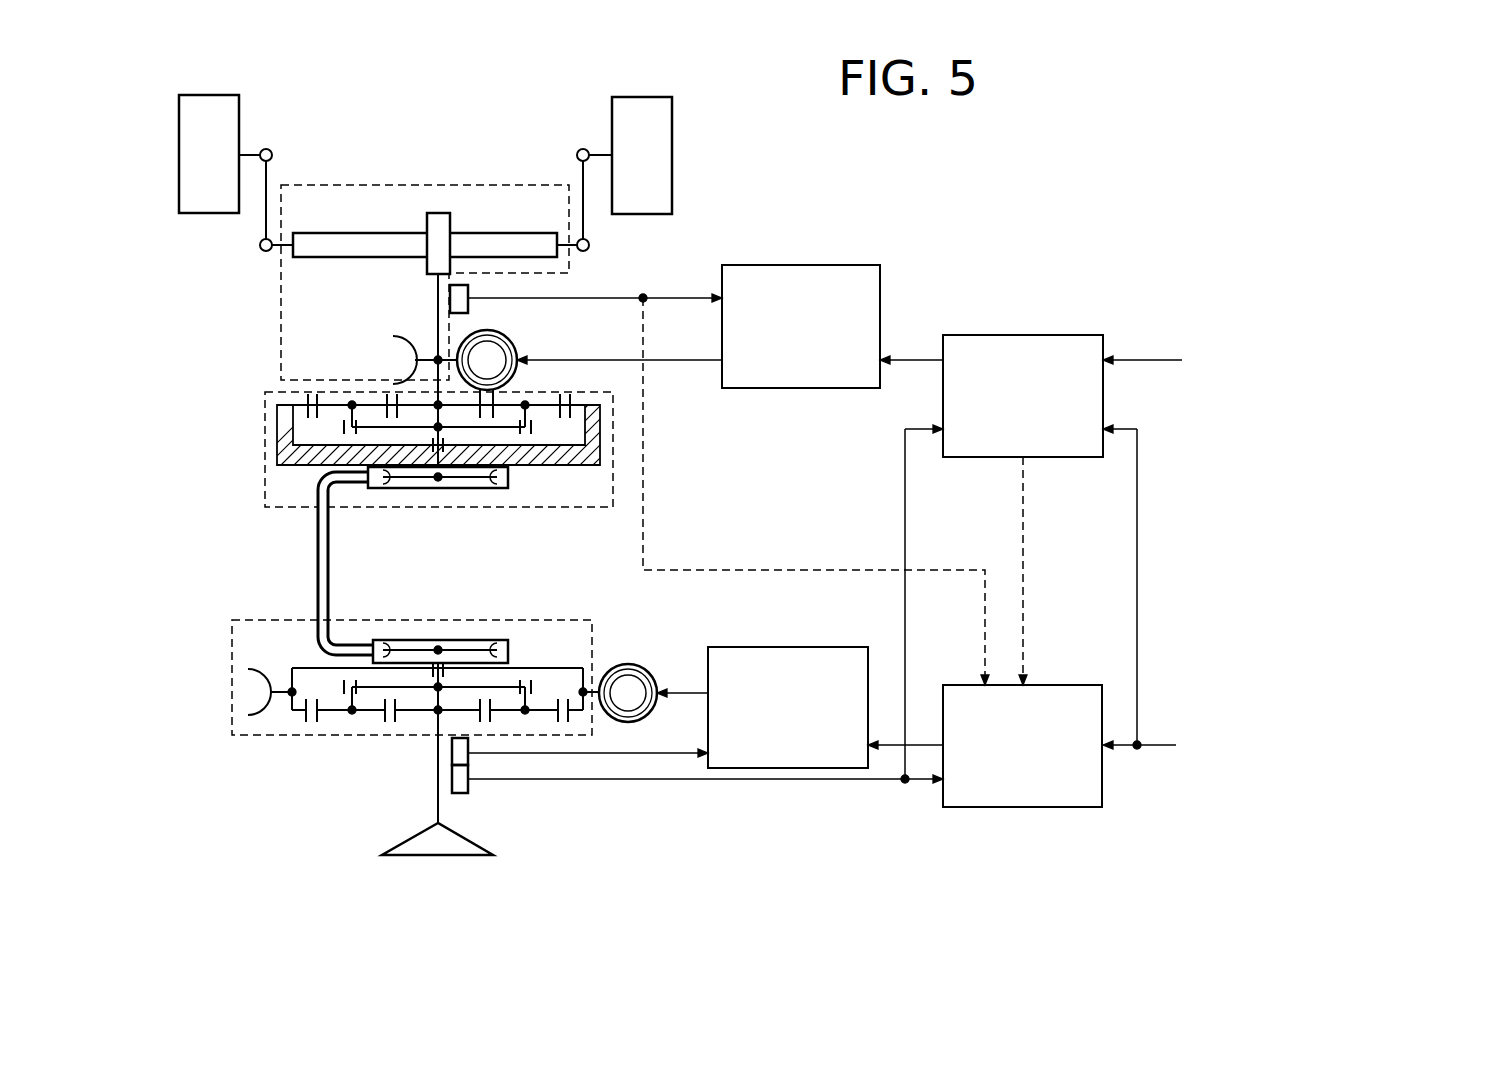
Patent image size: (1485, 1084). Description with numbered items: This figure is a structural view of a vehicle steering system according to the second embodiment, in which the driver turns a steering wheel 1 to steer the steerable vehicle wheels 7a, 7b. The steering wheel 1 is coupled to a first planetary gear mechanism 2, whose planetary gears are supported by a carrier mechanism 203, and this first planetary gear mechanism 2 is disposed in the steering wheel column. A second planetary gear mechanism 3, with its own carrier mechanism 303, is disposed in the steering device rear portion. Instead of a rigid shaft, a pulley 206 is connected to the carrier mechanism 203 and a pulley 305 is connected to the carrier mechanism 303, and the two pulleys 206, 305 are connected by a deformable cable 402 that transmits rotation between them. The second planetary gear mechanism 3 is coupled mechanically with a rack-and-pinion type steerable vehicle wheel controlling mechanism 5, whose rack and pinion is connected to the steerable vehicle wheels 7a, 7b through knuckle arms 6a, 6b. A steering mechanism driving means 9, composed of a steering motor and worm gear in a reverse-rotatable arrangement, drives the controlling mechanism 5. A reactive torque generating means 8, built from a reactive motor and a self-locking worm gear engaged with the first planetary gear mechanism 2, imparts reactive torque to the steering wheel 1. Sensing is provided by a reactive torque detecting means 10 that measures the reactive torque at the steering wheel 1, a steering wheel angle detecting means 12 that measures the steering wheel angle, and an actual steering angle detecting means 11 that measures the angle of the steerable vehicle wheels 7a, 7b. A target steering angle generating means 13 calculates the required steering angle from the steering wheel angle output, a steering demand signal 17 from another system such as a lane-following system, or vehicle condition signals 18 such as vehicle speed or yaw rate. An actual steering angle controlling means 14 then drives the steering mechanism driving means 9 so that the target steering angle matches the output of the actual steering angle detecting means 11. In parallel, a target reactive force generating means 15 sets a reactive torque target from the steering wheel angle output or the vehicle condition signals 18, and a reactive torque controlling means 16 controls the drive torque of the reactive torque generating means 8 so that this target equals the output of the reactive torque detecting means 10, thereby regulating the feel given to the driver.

The steering wheel 1 is at (402, 843).
The first planetary gear mechanism 2 is at (397, 682).
The second planetary gear mechanism 3 is at (443, 521).
The steerable vehicle wheel controlling mechanism 5 is at (281, 300).
The knuckle arm 6a is at (262, 149).
The knuckle arm 6b is at (587, 149).
The steerable vehicle wheel 7a is at (212, 95).
The steerable vehicle wheel 7b is at (624, 97).
The reactive torque generating means 8 is at (650, 708).
The steering mechanism driving means 9 is at (507, 372).
The reactive torque detecting means 10 is at (468, 758).
The actual steering angle detecting means 11 is at (468, 310).
The steering wheel angle detecting means 12 is at (468, 784).
The target steering angle generating means 13 is at (1081, 335).
The actual steering angle controlling means 14 is at (855, 265).
The target reactive force generating means 15 is at (1081, 685).
The reactive torque controlling means 16 is at (845, 647).
The steering demand signal 17 is at (1297, 333).
The vehicle condition signals 18 is at (1296, 705).
The carrier mechanism 203 is at (377, 690).
The pulley 206 is at (467, 650).
The carrier mechanism 303 is at (508, 430).
The pulley 305 is at (470, 480).
The deformable cable 402 is at (331, 562).